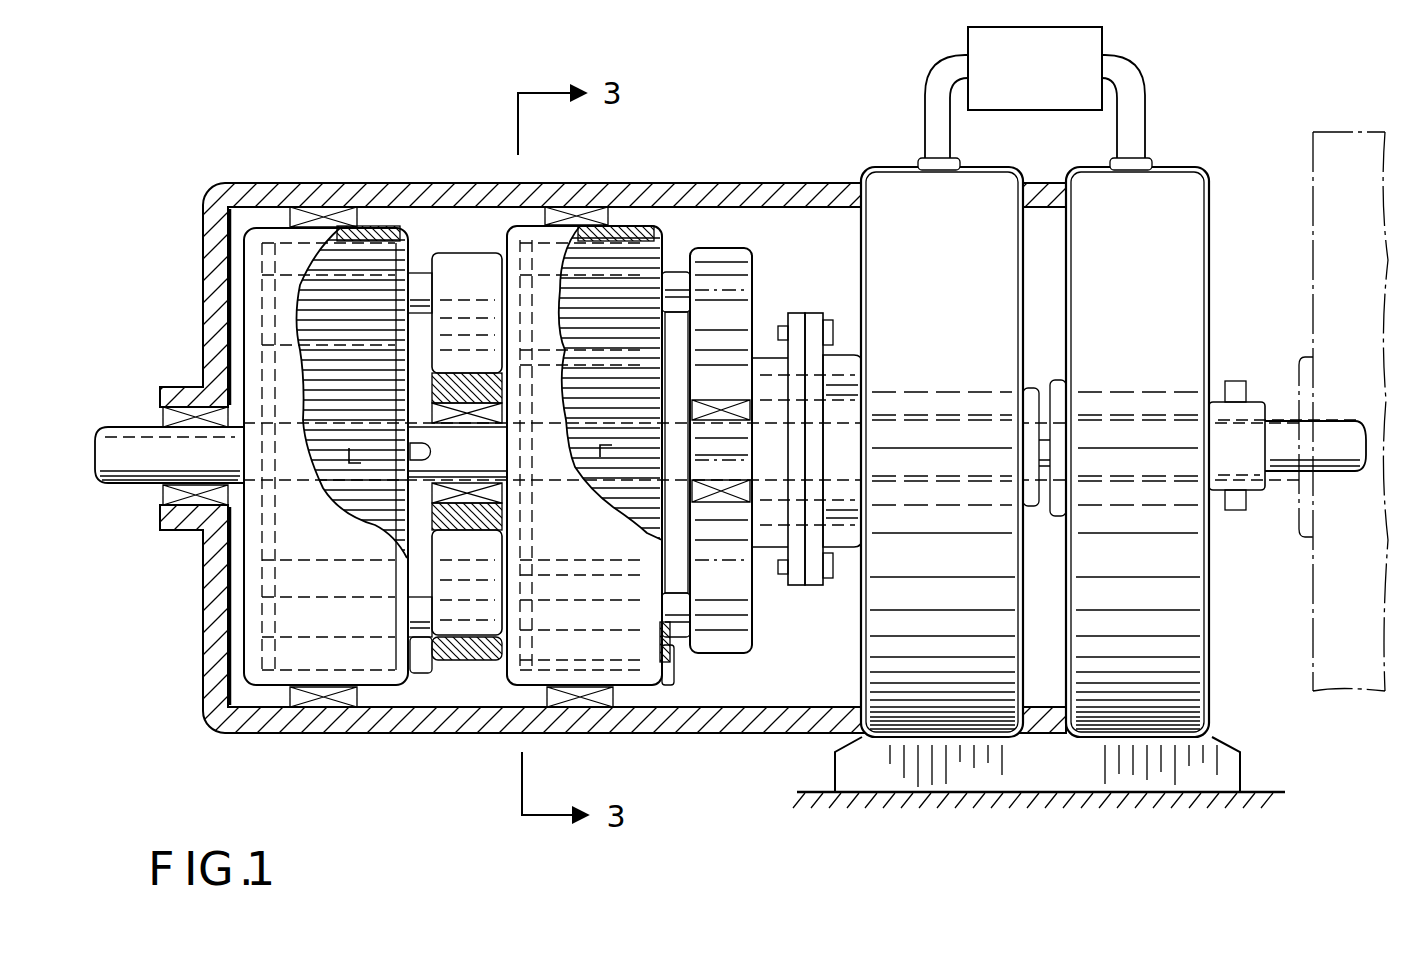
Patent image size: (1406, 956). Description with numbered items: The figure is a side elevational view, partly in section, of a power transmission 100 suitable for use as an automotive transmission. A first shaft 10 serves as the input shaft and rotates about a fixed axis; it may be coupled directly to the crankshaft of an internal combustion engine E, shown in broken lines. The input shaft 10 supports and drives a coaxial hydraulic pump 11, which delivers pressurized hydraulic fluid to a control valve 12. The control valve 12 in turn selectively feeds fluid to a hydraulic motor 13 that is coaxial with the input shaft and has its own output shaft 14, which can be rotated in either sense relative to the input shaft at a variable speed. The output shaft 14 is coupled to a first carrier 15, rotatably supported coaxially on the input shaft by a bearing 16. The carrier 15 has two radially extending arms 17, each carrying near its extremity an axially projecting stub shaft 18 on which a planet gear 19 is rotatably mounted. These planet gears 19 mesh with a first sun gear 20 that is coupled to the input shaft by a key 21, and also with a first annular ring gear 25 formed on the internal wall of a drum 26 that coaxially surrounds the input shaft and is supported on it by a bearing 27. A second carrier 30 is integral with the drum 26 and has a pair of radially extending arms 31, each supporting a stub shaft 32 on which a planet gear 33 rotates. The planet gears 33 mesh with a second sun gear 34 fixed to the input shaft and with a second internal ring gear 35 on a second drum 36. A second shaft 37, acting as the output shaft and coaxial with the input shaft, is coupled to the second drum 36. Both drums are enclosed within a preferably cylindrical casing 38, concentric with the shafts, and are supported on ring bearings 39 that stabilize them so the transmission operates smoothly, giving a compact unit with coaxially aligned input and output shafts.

The power transmission 100 is at (460, 112).
The casing 38 is at (204, 186).
The second drum 36 is at (240, 290).
The second shaft 37 is at (135, 425).
The ring bearings 39 is at (320, 208).
The planet gear 33 is at (378, 260).
The second internal ring gear 35 is at (300, 660).
The second sun gear 34 is at (385, 500).
The key 21 is at (352, 452).
The second carrier 30 is at (428, 690).
The stub shaft 32 is at (434, 258).
The arms 31 is at (470, 262).
The bearing 27 is at (503, 383).
The drum 26 is at (498, 230).
The first sun gear 20 is at (640, 492).
The planet gear 19 is at (625, 262).
The first annular ring gear 25 is at (660, 683).
The stub shaft 18 is at (672, 280).
The arms 17 is at (745, 300).
The bearing 16 is at (728, 400).
The output shaft 14 is at (845, 390).
The carrier 15 is at (760, 330).
The hydraulic motor 13 is at (878, 163).
The hydraulic pump 11 is at (1190, 165).
The control valve 12 is at (966, 37).
The first shaft 10 is at (1278, 410).
The internal combustion engine E is at (1345, 130).